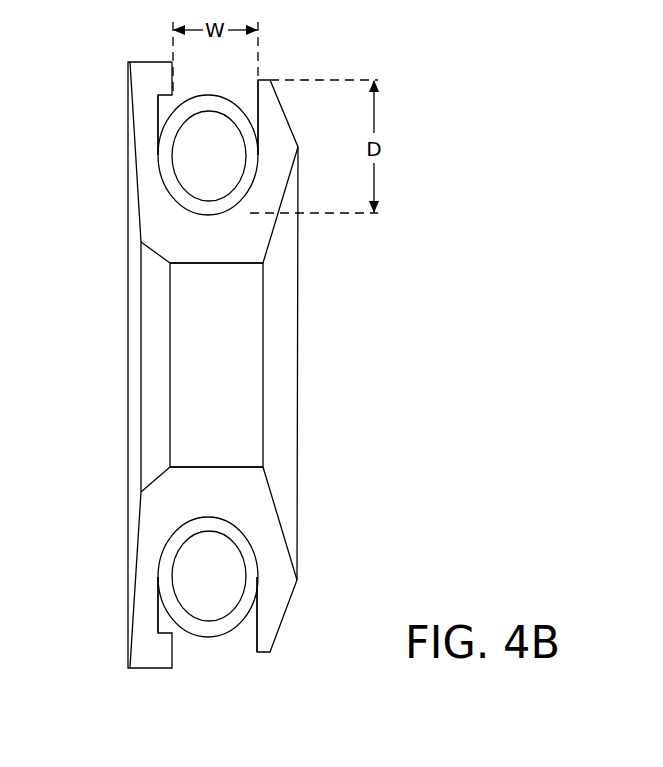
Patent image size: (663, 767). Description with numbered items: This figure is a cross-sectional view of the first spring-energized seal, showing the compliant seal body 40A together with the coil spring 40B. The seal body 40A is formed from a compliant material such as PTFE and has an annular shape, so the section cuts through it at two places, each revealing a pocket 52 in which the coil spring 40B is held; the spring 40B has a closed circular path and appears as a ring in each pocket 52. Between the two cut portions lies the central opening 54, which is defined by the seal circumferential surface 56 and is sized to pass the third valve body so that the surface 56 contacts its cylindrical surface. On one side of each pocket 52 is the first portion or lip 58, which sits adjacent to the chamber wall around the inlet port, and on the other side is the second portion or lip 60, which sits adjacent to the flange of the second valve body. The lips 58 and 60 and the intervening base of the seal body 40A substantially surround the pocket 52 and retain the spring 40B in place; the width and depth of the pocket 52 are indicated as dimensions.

The compliant seal body 40A is at (230, 247).
The coil spring 40B is at (190, 117).
The pocket 52 is at (243, 88).
The central opening 54 is at (228, 355).
The seal circumferential surface 56 is at (240, 268).
The first portion (lip) 58 is at (278, 133).
The second portion (lip) 60 is at (143, 128).